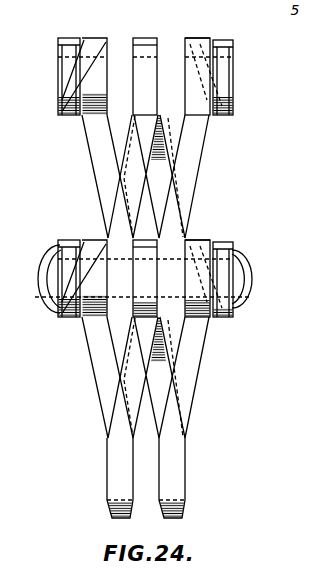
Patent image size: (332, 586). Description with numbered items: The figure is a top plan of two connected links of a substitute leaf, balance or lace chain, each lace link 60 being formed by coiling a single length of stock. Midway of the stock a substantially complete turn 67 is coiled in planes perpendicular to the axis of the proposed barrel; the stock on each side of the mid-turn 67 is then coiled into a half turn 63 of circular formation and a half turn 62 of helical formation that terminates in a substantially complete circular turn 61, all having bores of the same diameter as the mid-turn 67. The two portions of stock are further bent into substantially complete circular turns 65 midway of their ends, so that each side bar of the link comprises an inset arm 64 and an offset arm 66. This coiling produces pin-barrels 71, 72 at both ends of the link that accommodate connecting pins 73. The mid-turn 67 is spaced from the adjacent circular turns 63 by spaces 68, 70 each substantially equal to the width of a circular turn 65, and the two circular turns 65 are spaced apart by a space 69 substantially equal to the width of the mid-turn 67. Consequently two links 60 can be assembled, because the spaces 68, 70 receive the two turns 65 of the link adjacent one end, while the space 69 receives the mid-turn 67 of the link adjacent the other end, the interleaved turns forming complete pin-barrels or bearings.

The lace link 60 is at (147, 271).
The circular turn 61 is at (72, 37).
The helical half turn 62 is at (67, 90).
The circular half turn 63 is at (100, 78).
The inset arm 64 is at (145, 276).
The circular turn 65 is at (118, 320).
The offset arm 66 is at (146, 276).
The mid-turn 67 is at (145, 38).
The space 68 is at (118, 67).
The space 69 is at (140, 225).
The space 70 is at (167, 67).
The pin-barrel 71 is at (58, 48).
The pin-barrel 72 is at (187, 310).
The connecting pin 73 is at (253, 270).